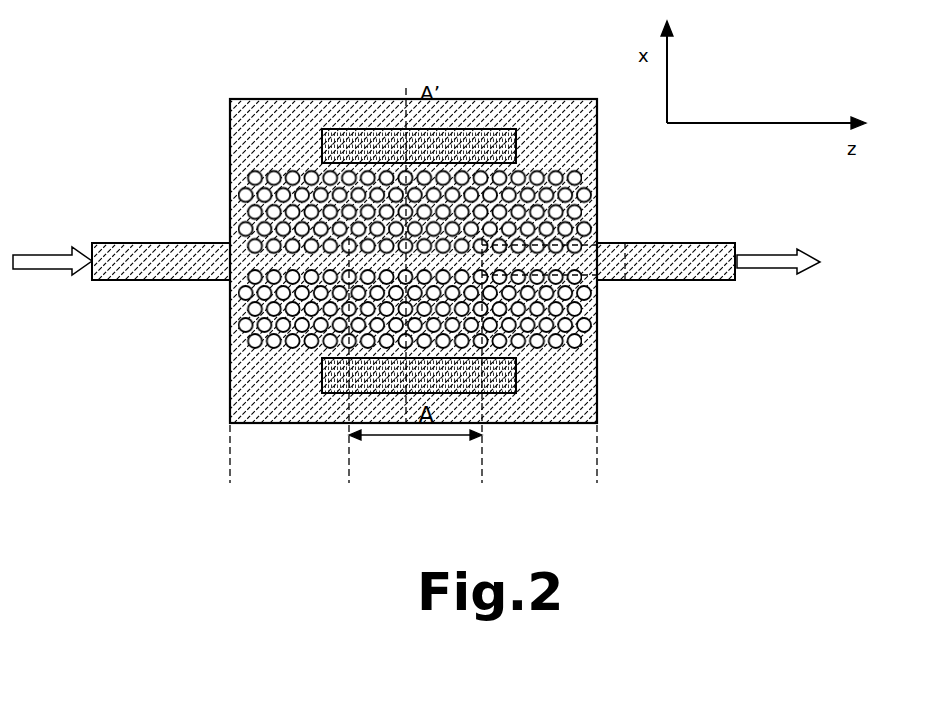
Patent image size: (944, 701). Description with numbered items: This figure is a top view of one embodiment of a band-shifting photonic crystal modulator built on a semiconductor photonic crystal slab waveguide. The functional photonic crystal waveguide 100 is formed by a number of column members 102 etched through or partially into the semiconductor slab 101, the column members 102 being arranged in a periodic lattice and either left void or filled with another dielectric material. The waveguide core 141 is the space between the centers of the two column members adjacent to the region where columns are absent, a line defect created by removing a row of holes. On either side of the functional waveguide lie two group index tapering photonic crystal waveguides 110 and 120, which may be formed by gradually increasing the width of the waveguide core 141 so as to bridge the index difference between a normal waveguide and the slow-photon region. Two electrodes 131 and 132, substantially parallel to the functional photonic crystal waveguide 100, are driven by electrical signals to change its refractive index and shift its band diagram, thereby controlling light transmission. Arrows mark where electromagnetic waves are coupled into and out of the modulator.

The functional photonic crystal waveguide 100 is at (412, 437).
The semiconductor slab 101 is at (250, 257).
The column members 102 is at (245, 190).
The group index tapering photonic crystal waveguide 110 is at (287, 360).
The group index tapering photonic crystal waveguide 120 is at (548, 365).
The electrode 131 is at (382, 126).
The electrode 132 is at (331, 405).
The waveguide core 141 is at (645, 232).